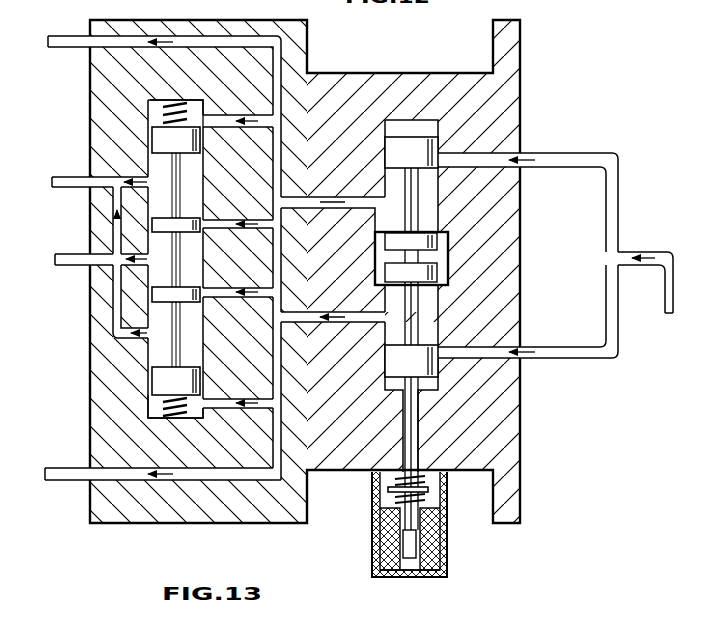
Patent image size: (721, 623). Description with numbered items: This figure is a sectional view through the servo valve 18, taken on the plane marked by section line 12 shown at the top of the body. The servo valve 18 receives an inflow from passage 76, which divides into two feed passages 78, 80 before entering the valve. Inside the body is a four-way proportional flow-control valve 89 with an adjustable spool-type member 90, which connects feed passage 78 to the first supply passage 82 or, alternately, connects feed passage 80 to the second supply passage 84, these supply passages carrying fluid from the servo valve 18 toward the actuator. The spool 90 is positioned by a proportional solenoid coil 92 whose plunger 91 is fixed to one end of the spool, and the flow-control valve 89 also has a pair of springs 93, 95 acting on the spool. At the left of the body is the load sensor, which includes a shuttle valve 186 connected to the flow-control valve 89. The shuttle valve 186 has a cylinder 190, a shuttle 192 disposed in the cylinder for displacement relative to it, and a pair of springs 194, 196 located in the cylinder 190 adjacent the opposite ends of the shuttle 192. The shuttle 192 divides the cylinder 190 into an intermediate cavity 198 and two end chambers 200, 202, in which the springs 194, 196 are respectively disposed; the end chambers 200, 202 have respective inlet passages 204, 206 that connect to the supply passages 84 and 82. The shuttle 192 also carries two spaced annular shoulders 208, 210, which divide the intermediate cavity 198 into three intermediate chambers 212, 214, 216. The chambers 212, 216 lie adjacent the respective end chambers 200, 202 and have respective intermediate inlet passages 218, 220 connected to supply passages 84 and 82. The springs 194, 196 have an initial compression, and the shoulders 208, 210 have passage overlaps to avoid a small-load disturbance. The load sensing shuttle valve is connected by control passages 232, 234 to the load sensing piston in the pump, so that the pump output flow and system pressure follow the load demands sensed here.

The section line 12— 12 is at (570, 39).
The servo valve 18 is at (548, 114).
The passage 76 is at (645, 252).
The feed passage 78 is at (585, 359).
The feed passage 80 is at (614, 156).
The first supply passage 82 is at (58, 468).
The second supply passage 84 is at (118, 36).
The four-way proportional flow-control valve 89 is at (519, 226).
The spool-type member 90 is at (418, 253).
The plunger 91 is at (402, 525).
The proportional solenoid coil 92 is at (430, 566).
The spring 93 is at (430, 480).
The spring 95 is at (432, 500).
The shuttle valve 186 is at (138, 122).
The cylinder 190 is at (204, 351).
The shuttle 192 is at (180, 342).
The spring 194 is at (201, 99).
The spring 196 is at (187, 420).
The intermediate cavity 198 is at (199, 278).
The end chamber 200 is at (152, 112).
The end chamber 202 is at (155, 412).
The inlet passage 204 is at (219, 113).
The inlet passage 206 is at (218, 407).
The annular shoulder 208 is at (193, 213).
The annular shoulder 210 is at (192, 284).
The intermediate chamber 212 is at (158, 166).
The intermediate chamber 214 is at (160, 265).
The intermediate chamber 216 is at (156, 351).
The intermediate inlet passage 218 is at (222, 222).
The intermediate inlet passage 220 is at (259, 289).
The control passage 232 is at (54, 189).
The control passage 234 is at (65, 267).